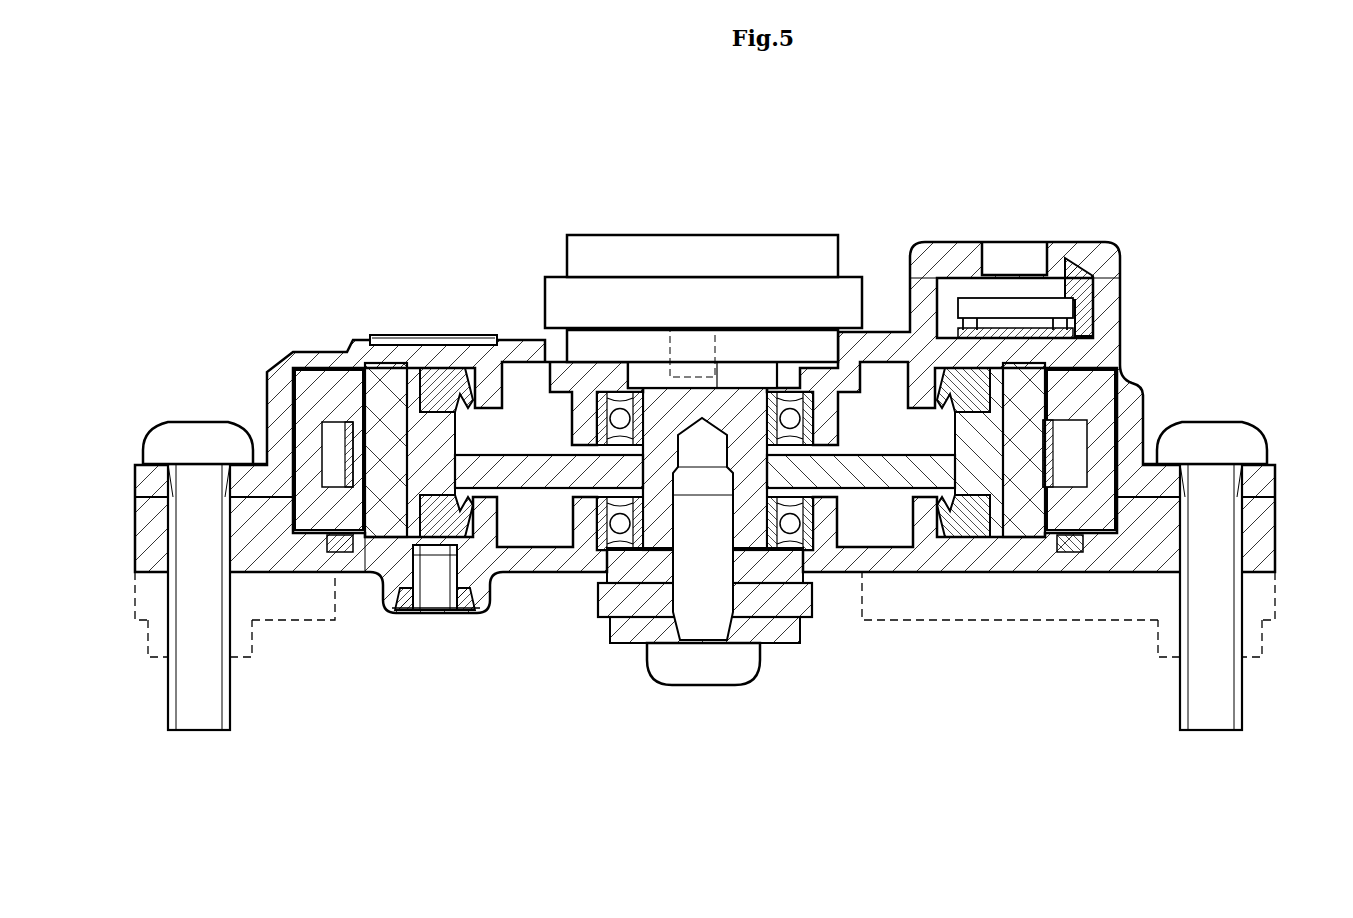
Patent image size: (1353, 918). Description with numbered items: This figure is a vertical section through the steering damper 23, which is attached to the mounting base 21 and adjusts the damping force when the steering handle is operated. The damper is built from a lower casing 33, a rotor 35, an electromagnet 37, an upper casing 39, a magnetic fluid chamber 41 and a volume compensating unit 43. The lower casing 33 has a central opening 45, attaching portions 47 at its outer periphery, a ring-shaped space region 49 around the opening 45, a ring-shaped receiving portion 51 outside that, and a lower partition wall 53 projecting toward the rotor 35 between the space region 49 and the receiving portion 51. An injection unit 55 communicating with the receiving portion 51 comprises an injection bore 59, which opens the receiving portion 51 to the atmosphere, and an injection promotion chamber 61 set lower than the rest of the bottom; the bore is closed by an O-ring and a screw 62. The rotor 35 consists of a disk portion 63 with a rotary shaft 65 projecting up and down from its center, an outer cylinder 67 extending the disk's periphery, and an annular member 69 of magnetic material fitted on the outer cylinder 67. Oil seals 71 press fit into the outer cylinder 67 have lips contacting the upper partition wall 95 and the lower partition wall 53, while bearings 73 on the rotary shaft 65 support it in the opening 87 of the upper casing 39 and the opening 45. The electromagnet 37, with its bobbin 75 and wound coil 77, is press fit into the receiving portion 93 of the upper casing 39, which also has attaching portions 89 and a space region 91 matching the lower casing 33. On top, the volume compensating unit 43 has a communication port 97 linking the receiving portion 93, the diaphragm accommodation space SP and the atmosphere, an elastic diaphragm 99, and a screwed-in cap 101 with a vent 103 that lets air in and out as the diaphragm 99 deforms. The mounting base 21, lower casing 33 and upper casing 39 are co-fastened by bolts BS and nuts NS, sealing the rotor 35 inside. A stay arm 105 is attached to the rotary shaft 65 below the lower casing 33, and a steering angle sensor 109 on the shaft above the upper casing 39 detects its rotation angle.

The mounting base 21 is at (135, 598).
The steering damper 23 is at (1185, 180).
The lower casing 33 is at (287, 578).
The rotor 35 is at (573, 453).
The electromagnet 37 is at (310, 430).
The upper casing 39 is at (266, 362).
The magnetic fluid chamber 41 is at (436, 344).
The volume compensating unit 43 is at (913, 243).
The opening 45 is at (605, 578).
The attaching portions 47 is at (178, 530).
The space region 49 is at (525, 533).
The receiving portion 51 is at (372, 575).
The lower partition wall 53 is at (500, 542).
The injection unit 55 is at (384, 616).
The injection bore 59 is at (423, 595).
The injection promotion chamber 61 is at (440, 580).
The screw 62 is at (403, 615).
The disk portion 63 is at (482, 462).
The rotary shaft 65 is at (655, 393).
The outer cylinder 67 is at (400, 375).
The annular member 69 is at (360, 400).
The oil seals 71 is at (455, 380).
The bearings 73 is at (785, 393).
The bobbin 75 is at (307, 430).
The coil 77 is at (322, 470).
The opening 87 is at (575, 315).
The attaching portions 89 is at (178, 484).
The space region 91 is at (497, 445).
The receiving portion 93 is at (377, 383).
The upper partition wall 95 is at (505, 398).
The communication port 97 is at (1016, 245).
The diaphragm 99 is at (1000, 305).
The cap 101 is at (970, 258).
The vent 103 is at (1067, 258).
The stay arm 105 is at (770, 648).
The steering angle sensor 109 is at (748, 250).
The bolts BS is at (180, 427).
The nuts NS is at (148, 648).
The diaphragm accommodation space SP is at (998, 321).